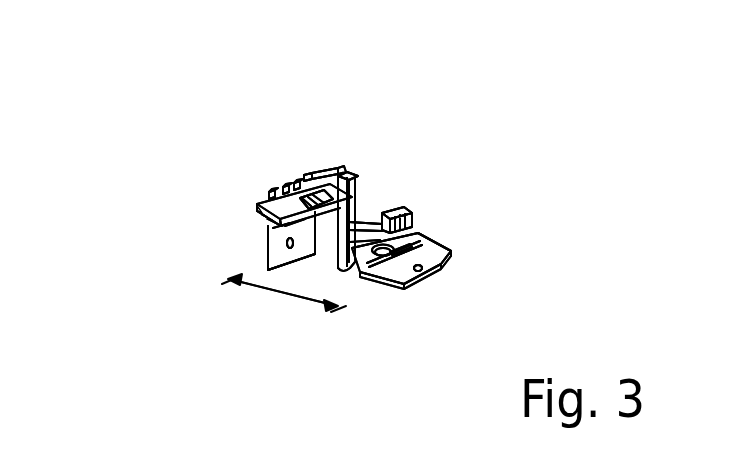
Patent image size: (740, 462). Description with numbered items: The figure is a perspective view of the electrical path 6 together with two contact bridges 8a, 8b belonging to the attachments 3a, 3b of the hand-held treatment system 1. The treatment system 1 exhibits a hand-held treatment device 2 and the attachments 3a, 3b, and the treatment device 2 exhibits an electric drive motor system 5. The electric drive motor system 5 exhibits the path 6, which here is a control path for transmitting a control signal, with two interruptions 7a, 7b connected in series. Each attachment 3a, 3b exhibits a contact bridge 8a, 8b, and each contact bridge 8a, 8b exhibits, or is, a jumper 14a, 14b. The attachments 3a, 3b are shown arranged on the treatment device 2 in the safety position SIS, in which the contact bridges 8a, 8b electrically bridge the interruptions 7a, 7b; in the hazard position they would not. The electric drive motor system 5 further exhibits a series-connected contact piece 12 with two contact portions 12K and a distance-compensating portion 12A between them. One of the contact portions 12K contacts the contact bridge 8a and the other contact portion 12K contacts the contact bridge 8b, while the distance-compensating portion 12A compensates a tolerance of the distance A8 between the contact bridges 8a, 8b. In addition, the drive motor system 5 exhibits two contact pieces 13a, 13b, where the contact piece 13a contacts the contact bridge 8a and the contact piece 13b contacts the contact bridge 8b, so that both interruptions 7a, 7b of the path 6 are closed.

The hand-held treatment system 1 is at (155, 148).
The hand-held treatment device 2 is at (268, 191).
The electric drive motor system 5 is at (288, 183).
The electrical path 6 is at (306, 179).
The interruption 7a is at (312, 176).
The interruption 7b is at (412, 222).
The contact piece 13a is at (318, 179).
The distance-compensating portion 12A is at (363, 208).
The series-connected contact piece 12 is at (388, 213).
The contact piece 13b is at (447, 225).
The attachment 3b is at (460, 250).
The contact bridge 8b is at (432, 281).
The jumper 14b is at (418, 268).
The contact portion 12K is at (261, 220).
The attachment 3a is at (265, 262).
The contact bridge 8a is at (292, 289).
The jumper 14a is at (242, 305).
The distance between the contact bridges A8 is at (295, 292).
The safety position SIS is at (310, 283).